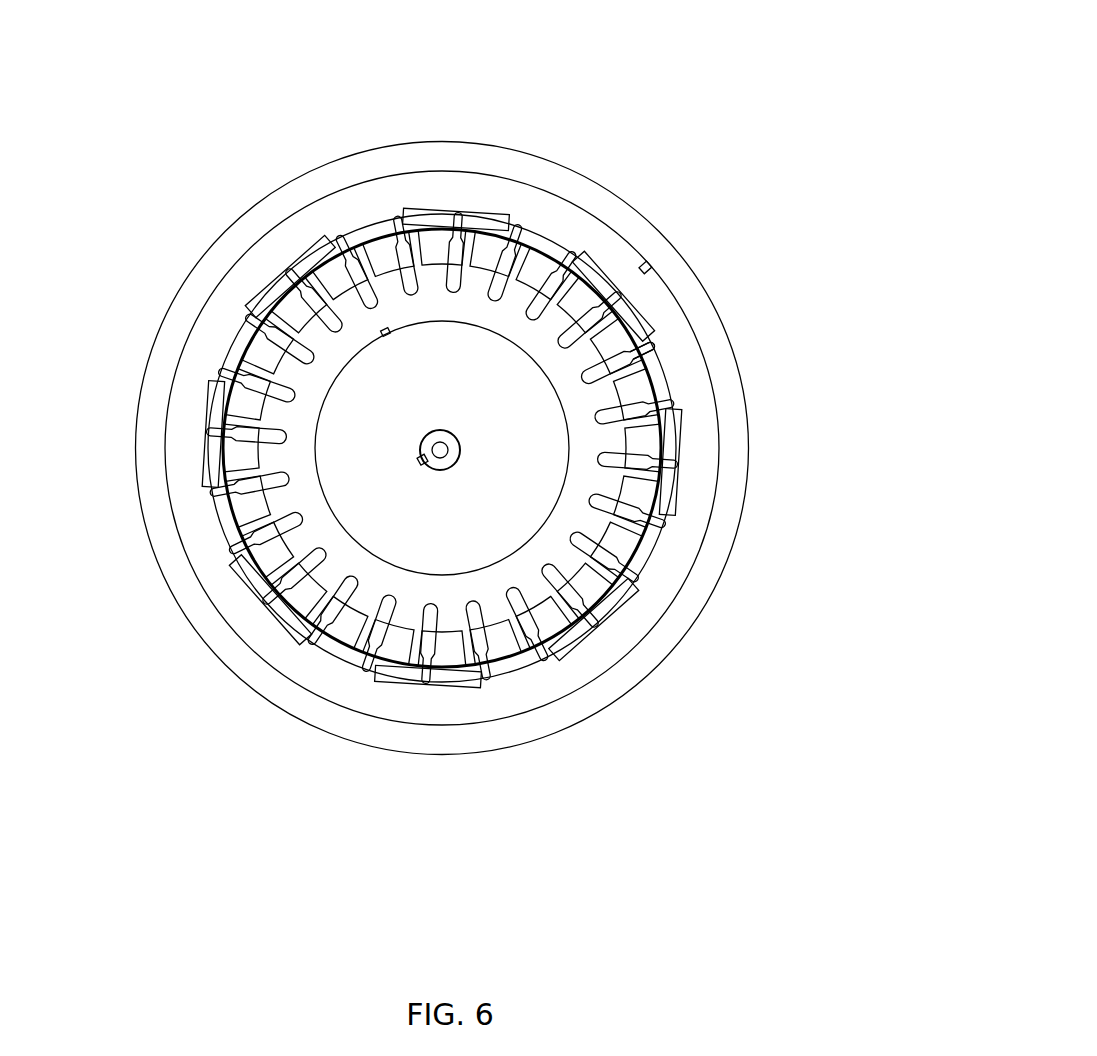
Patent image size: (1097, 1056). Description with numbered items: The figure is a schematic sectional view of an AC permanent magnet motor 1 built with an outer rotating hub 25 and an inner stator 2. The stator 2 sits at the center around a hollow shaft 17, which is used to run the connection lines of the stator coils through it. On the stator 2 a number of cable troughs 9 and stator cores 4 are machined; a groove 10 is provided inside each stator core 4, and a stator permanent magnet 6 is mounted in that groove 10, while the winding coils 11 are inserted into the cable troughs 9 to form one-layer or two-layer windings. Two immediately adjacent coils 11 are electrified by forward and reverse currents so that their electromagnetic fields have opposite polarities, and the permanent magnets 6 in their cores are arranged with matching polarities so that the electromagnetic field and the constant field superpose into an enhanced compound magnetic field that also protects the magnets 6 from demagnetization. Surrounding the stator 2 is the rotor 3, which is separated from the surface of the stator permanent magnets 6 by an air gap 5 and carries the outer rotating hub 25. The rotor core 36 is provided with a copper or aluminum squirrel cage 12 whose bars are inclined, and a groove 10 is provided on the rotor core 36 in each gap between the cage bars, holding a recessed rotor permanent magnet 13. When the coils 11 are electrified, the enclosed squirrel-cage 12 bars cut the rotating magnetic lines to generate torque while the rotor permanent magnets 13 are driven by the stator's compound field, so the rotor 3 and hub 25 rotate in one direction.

The AC permanent magnet motor 1 is at (185, 285).
The stator 2 is at (272, 457).
The rotor 3 is at (207, 545).
The stator core 4 is at (578, 465).
The air gap 5 is at (650, 555).
The stator permanent magnet 6 is at (635, 378).
The cable trough 9 is at (588, 376).
The groove 10 is at (577, 310).
The coil 11 is at (532, 313).
The squirrel cage 12 is at (652, 332).
The rotor permanent magnet 13 is at (695, 283).
The hollow shaft 17 is at (453, 463).
The outer rotating hub 25 is at (620, 297).
The rotor core 36 is at (618, 248).